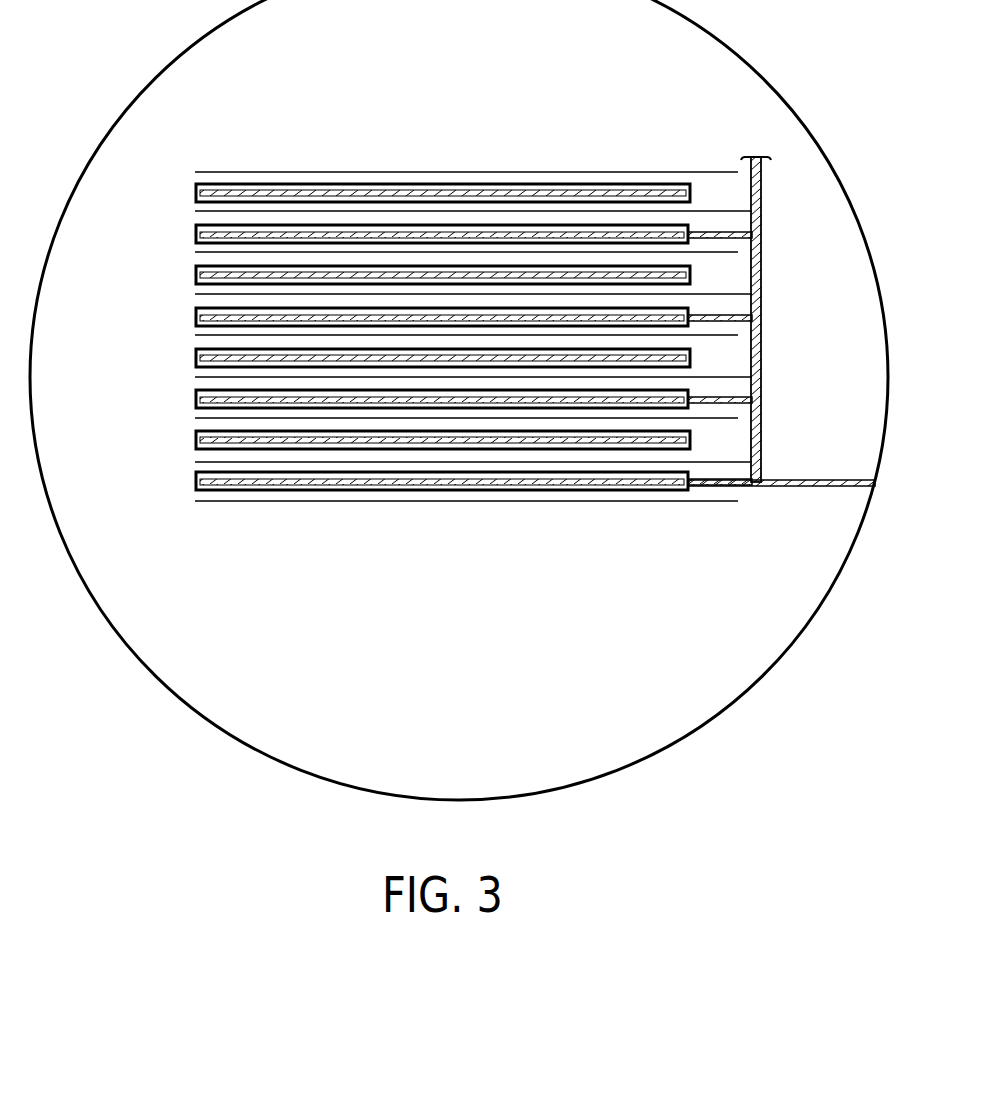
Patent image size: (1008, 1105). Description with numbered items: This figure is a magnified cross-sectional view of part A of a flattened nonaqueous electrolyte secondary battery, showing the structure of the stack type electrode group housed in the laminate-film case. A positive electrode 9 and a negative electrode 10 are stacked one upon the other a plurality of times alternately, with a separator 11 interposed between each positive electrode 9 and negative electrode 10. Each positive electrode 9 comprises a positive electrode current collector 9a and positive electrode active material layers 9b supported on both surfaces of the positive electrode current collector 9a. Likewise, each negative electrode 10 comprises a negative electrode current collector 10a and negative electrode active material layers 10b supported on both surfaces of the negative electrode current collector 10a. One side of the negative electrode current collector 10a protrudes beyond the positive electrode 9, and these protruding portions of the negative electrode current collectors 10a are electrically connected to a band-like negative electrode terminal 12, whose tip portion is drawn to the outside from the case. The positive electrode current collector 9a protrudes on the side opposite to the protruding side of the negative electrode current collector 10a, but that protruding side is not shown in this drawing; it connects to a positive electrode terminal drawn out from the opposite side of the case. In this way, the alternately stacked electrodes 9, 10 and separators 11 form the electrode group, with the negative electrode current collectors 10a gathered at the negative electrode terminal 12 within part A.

The positive electrode 9 is at (80, 505).
The positive electrode current collector 9a is at (197, 440).
The positive electrode active material layers 9b is at (197, 432).
The negative electrode 10 is at (203, 608).
The negative electrode current collector 10a is at (726, 232).
The negative electrode active material layers 10b is at (197, 476).
The separator 11 is at (538, 172).
The negative electrode terminal 12 is at (829, 488).
The part A is at (750, 688).